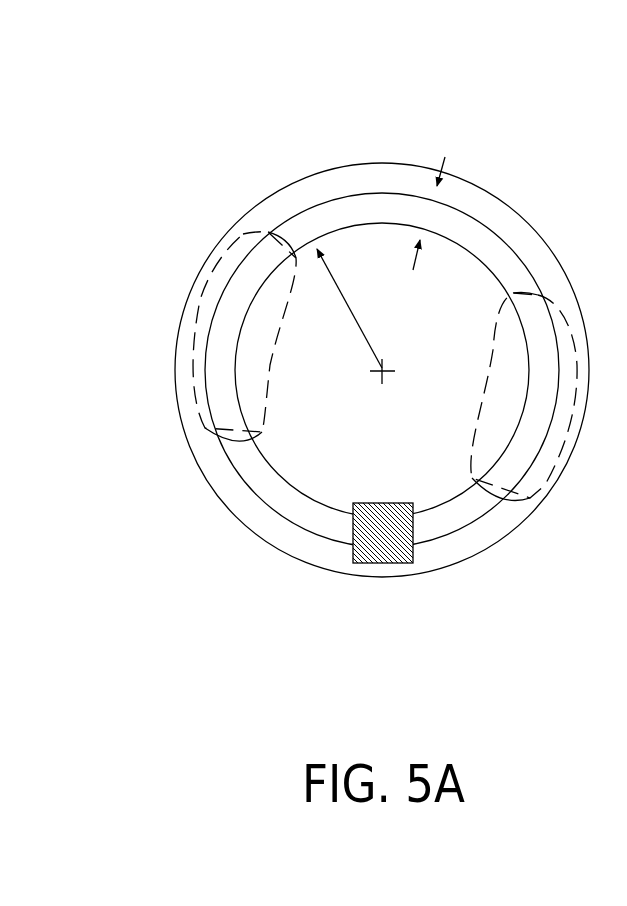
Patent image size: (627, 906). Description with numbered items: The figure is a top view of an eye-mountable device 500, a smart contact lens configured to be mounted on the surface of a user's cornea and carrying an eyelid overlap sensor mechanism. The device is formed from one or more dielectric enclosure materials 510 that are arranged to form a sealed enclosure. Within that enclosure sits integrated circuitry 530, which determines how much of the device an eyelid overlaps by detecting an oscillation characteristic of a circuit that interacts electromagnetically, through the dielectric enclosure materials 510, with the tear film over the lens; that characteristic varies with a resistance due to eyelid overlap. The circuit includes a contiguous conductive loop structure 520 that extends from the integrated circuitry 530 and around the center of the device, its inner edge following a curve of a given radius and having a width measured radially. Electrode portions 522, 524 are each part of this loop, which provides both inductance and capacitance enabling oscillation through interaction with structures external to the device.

The eye-mountable device 500 is at (140, 91).
The dielectric enclosure materials 510 is at (510, 225).
The conductive loop structure 520 is at (253, 478).
The electrode portion 522 is at (215, 388).
The electrode portion 524 is at (540, 434).
The integrated circuitry 530 is at (368, 547).